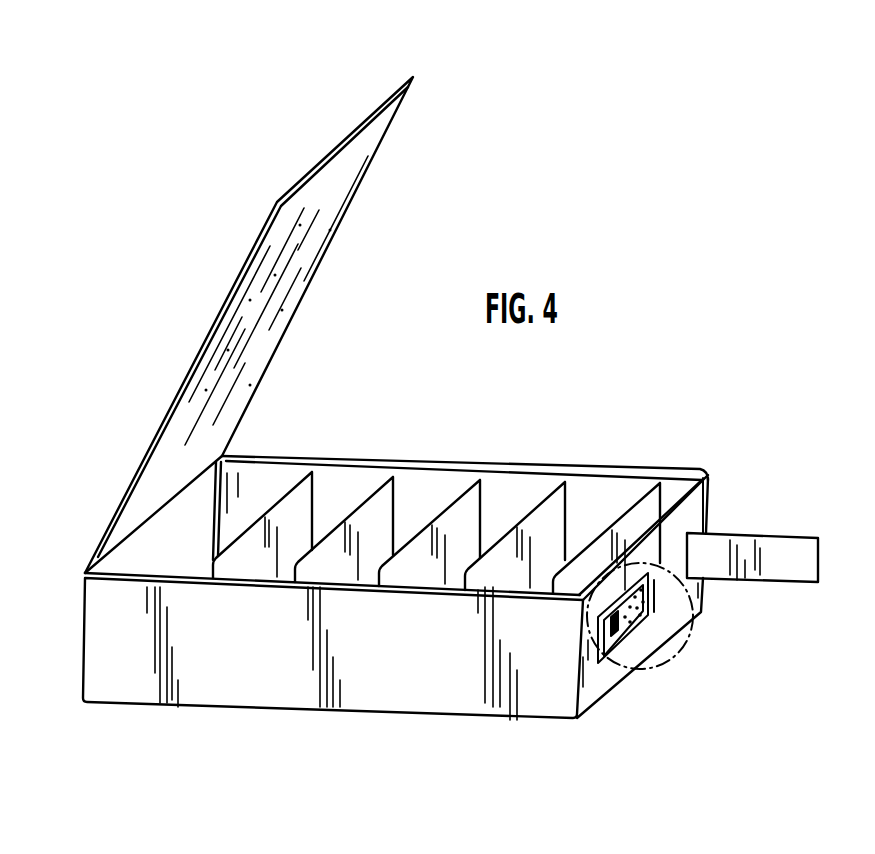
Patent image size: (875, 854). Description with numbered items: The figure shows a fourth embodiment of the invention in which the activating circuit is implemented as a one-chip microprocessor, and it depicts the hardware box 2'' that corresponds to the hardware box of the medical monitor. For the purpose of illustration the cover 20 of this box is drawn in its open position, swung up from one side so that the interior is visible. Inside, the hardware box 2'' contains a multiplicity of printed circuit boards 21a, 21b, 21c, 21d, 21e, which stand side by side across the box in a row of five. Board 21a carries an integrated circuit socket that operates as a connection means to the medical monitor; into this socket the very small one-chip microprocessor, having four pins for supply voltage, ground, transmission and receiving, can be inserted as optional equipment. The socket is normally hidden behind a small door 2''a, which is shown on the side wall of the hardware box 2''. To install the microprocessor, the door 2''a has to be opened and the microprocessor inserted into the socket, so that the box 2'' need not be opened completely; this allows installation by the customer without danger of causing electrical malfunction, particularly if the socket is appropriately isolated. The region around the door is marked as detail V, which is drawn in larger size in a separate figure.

The hardware box 2'' is at (395, 612).
The small door 2''a is at (767, 530).
The cover 20 is at (383, 127).
The printed circuit board 21a is at (645, 497).
The printed circuit board 21b is at (557, 497).
The printed circuit board 21c is at (470, 497).
The printed circuit board 21d is at (387, 497).
The printed circuit board 21e is at (295, 493).
The detail V is at (667, 666).